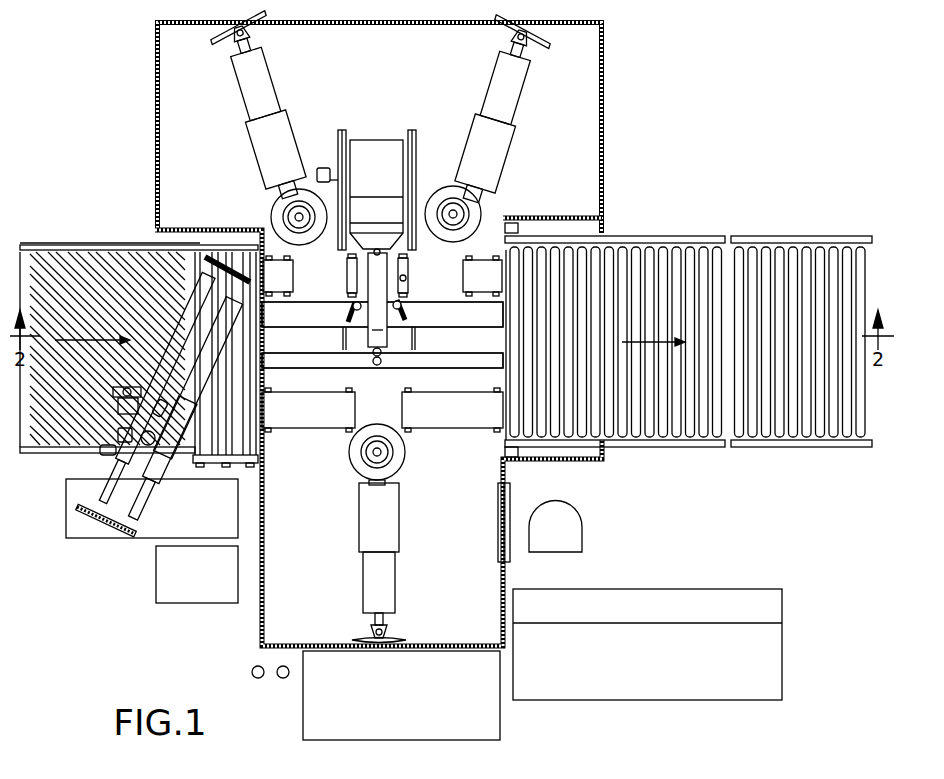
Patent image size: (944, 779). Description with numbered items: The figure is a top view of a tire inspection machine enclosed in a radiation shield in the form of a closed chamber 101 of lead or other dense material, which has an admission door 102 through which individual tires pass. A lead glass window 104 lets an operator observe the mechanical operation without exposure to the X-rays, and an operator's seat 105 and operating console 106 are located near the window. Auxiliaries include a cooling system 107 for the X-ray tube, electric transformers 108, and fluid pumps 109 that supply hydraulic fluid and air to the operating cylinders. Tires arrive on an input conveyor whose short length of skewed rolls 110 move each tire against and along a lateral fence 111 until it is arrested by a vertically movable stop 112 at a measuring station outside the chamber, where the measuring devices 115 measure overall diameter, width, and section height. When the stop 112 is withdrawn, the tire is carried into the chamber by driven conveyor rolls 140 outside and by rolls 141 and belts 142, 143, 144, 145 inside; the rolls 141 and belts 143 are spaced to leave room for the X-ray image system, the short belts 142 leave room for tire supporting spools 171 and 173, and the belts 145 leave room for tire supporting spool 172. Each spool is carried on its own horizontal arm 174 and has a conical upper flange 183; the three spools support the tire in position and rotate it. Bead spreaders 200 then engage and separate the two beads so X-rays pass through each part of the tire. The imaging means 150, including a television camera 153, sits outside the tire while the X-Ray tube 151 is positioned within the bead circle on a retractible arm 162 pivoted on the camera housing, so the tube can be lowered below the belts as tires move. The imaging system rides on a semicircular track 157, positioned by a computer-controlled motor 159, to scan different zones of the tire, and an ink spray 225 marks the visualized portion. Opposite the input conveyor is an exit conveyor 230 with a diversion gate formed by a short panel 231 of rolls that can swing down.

The closed chamber 101 is at (604, 105).
The admission door 102 is at (258, 263).
The lead glass window 104 is at (510, 492).
The operator's seat 105 is at (582, 540).
The operating console 106 is at (643, 674).
The cooling system 107 is at (205, 588).
The electric transformers 108 is at (201, 523).
The fluid pumps 109 is at (399, 716).
The skewed rolls 110 is at (80, 278).
The lateral fence 111 is at (40, 245).
The vertically movable stop 112 is at (228, 396).
The measuring devices 115 is at (105, 460).
The driven conveyor rolls 140 is at (217, 438).
The rolls 141 is at (347, 270).
The short belts 142 is at (293, 288).
The belts 143 is at (300, 316).
The belts 144 is at (298, 365).
The belts 145 is at (320, 430).
The imaging means 150 is at (380, 160).
The X-Ray tube 151 is at (378, 367).
The television camera 153 is at (389, 186).
The semicircular track 157 is at (416, 155).
The motor 159 is at (323, 168).
The retractible arm 162 is at (388, 340).
The tire supporting spool 171 is at (290, 210).
The tire supporting spool 172 is at (465, 208).
The tire supporting spool 173 is at (390, 458).
The horizontal arm 174 is at (248, 90).
The upper flange 183 is at (284, 215).
The bead spreaders 200 is at (405, 308).
The ink spray 225 is at (405, 280).
The exit conveyor 230 is at (793, 420).
The short panel 231 is at (662, 420).